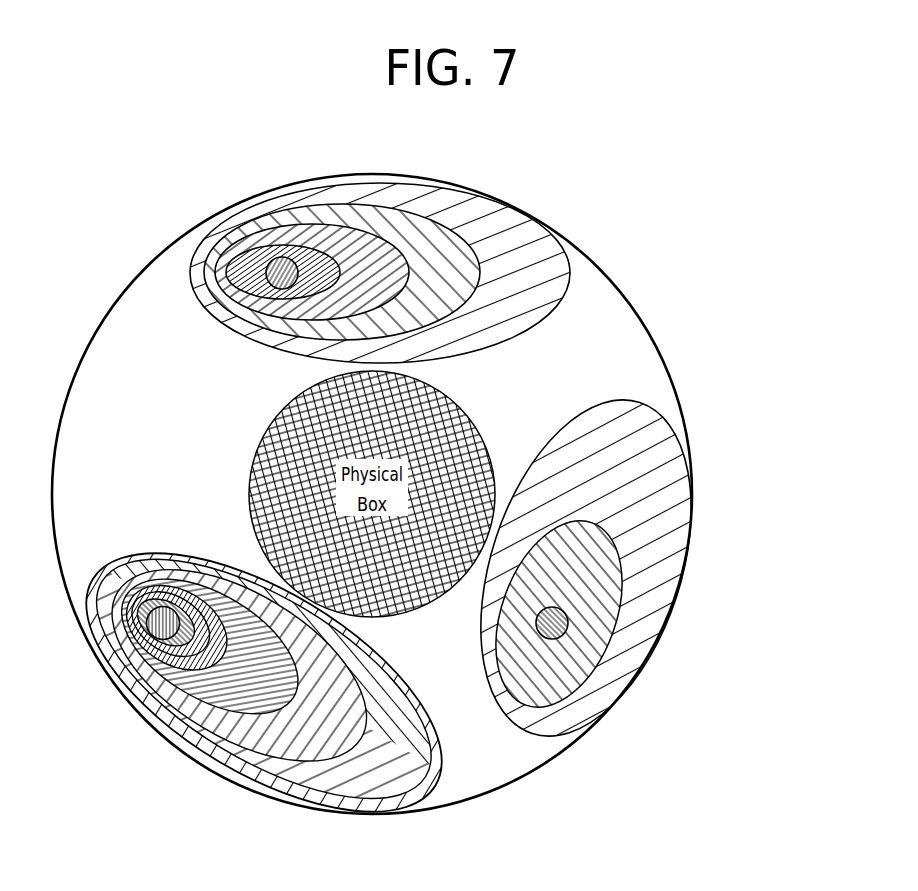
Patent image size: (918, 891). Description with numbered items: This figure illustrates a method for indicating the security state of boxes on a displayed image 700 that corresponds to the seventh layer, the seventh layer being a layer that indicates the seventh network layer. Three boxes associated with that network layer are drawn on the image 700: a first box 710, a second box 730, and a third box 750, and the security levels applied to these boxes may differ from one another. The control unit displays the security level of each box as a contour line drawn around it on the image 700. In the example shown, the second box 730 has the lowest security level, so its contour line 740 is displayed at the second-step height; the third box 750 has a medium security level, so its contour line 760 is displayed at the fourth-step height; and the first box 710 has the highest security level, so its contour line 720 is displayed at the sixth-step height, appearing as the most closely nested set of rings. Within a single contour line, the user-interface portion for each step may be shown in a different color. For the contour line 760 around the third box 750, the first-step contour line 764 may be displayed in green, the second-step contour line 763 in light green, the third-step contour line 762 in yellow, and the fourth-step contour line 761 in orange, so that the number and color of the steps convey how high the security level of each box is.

The image corresponding to the seventh layer 700 is at (557, 758).
The first box 710 is at (153, 643).
The contour line indicating the security level of the first box 720 is at (459, 445).
The second box 730 is at (566, 634).
The contour line indicating the security level of the second box 740 is at (459, 445).
The third box 750 is at (268, 262).
The contour line indicating the security level of the third box 760 is at (459, 445).
The fourth-step contour line 761 is at (312, 258).
The third-step contour line 762 is at (365, 247).
The second-step contour line 763 is at (430, 240).
The first-step contour line 764 is at (495, 224).